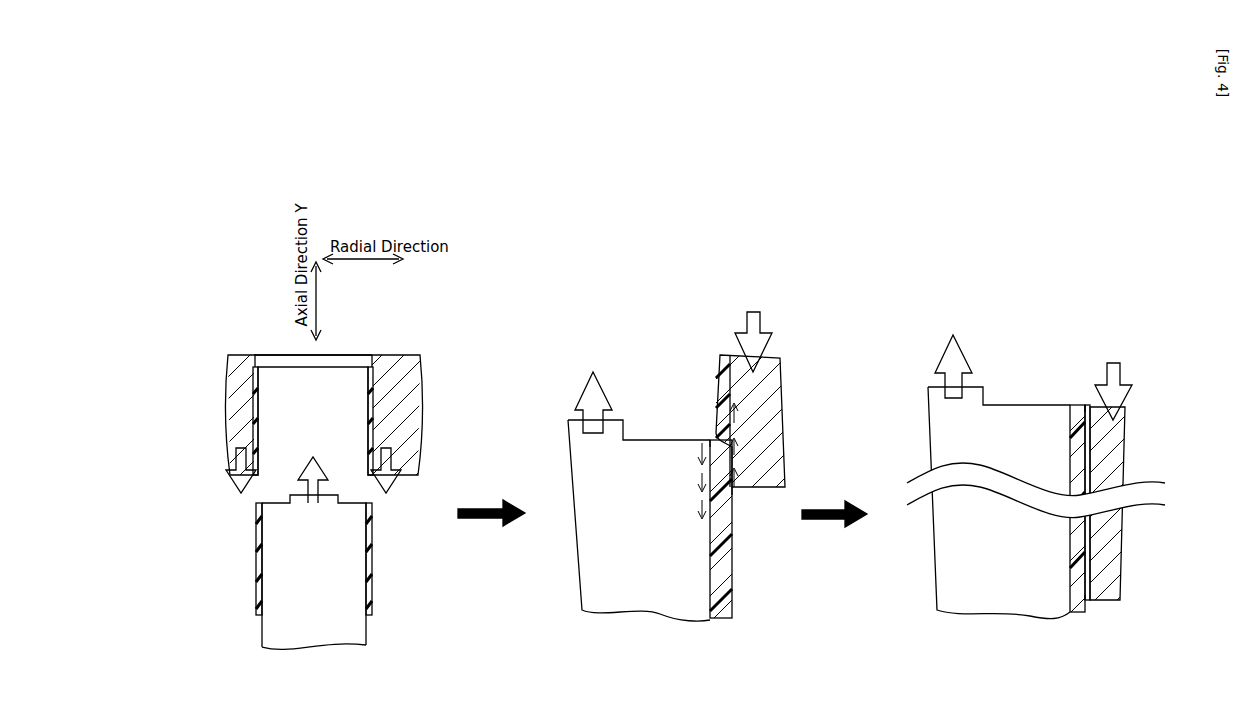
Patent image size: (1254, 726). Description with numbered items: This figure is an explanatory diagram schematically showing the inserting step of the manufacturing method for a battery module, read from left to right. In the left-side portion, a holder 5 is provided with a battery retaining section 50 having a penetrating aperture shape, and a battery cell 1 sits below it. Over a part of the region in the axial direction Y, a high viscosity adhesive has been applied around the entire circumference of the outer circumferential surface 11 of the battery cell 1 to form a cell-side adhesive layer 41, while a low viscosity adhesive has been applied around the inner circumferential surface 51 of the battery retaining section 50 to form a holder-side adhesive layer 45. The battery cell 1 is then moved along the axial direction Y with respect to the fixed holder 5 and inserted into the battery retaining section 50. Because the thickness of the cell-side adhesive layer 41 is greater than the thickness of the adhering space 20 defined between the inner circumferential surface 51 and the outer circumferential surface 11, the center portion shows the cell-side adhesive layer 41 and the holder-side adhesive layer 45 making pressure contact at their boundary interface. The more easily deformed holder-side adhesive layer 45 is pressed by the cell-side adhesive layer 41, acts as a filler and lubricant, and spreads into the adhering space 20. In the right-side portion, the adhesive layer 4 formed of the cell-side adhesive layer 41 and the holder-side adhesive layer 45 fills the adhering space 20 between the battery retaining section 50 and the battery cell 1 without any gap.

The battery cell 1 is at (352, 627).
The adhesive layer 4 is at (702, 417).
The holder 5 is at (405, 362).
The outer circumferential surface 11 is at (264, 622).
The adhering space 20 is at (738, 492).
The cell-side adhesive layer 41 is at (258, 560).
The holder-side adhesive layer 45 is at (253, 420).
The battery retaining section 50 is at (354, 348).
The inner circumferential surface 51 is at (265, 362).